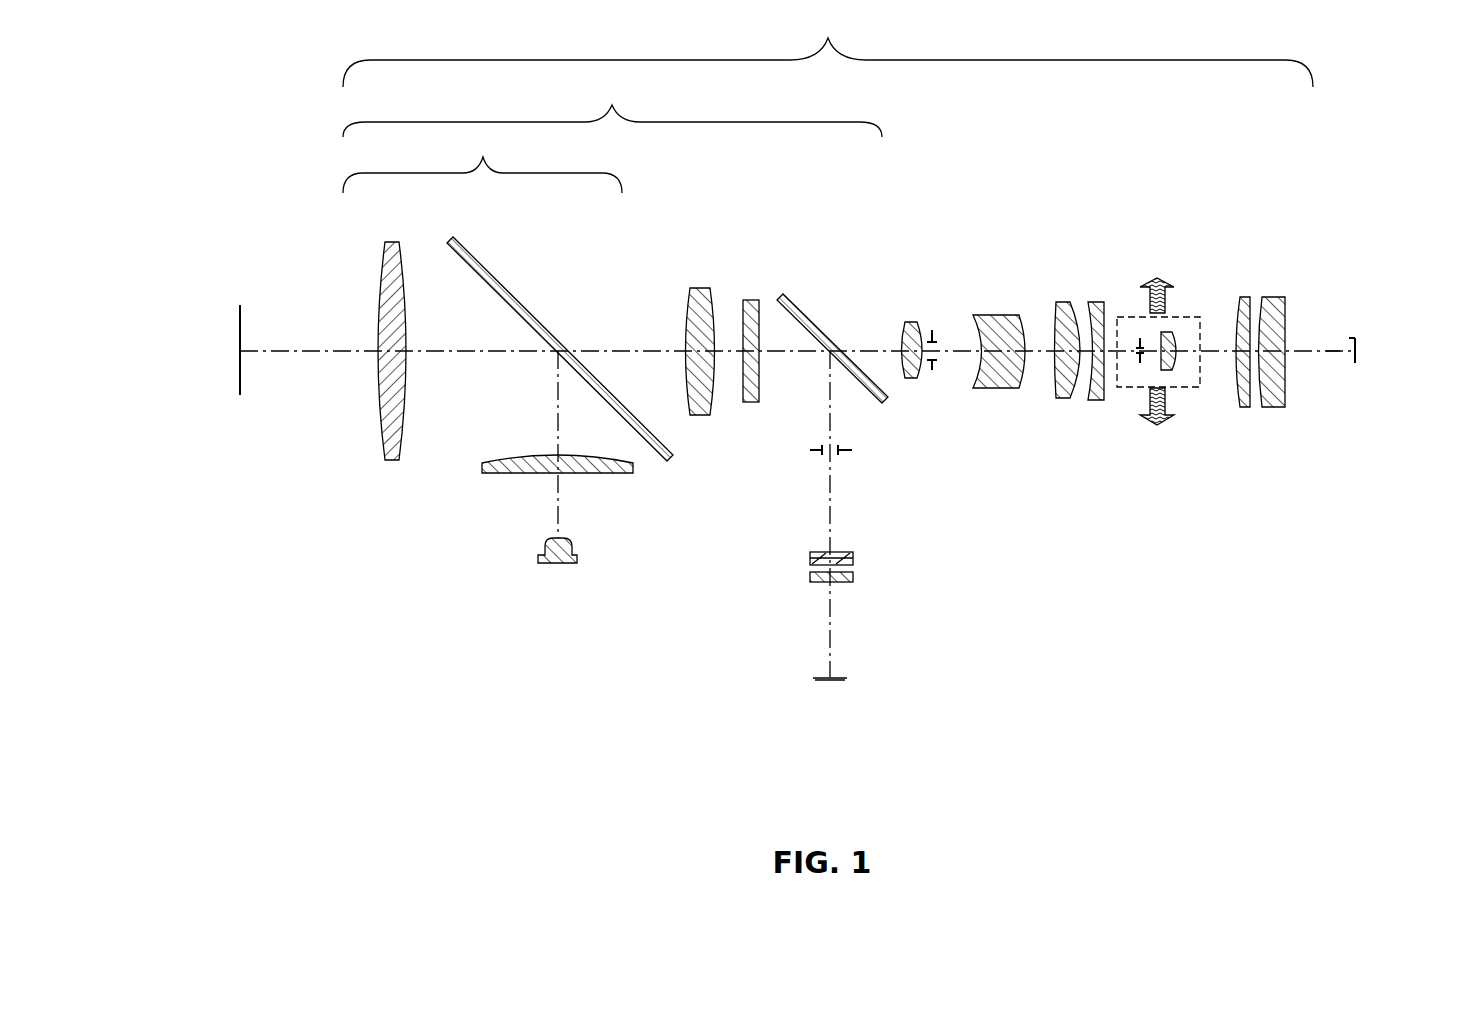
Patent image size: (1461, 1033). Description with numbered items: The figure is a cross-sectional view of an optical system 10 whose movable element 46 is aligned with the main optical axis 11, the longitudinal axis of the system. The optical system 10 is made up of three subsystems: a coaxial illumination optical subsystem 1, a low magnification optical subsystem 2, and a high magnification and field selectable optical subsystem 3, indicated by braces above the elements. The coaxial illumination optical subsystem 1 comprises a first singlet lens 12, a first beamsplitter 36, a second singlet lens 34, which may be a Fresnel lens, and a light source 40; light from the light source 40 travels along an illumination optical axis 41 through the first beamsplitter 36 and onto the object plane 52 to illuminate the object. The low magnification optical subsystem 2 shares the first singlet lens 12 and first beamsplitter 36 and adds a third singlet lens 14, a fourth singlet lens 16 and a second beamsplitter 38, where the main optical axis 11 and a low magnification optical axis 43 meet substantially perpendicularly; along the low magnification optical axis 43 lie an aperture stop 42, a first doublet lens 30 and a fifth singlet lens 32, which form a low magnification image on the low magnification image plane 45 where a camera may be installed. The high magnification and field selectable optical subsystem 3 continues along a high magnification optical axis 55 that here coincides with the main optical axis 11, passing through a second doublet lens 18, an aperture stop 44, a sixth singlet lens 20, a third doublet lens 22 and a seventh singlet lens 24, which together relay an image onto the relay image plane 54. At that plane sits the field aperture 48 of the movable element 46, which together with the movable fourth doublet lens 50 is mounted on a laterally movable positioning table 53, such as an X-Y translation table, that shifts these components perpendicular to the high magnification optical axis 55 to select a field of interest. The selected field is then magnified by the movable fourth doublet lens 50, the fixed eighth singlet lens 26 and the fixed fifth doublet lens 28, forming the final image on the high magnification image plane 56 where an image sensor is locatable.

The coaxial illumination optical subsystem 1 is at (482, 162).
The low magnification optical subsystem 2 is at (612, 108).
The high magnification and field selectable optical subsystem 3 is at (828, 47).
The optical system 10 is at (1124, 590).
The main optical axis 11 is at (317, 356).
The first singlet lens 12 is at (385, 255).
The third singlet lens 14 is at (699, 287).
The fourth singlet lens 16 is at (752, 300).
The second doublet lens 18 is at (913, 322).
The sixth singlet lens 20 is at (984, 313).
The third doublet lens 22 is at (1051, 387).
The seventh singlet lens 24 is at (1088, 390).
The eighth singlet lens 26 is at (1244, 299).
The fifth doublet lens 28 is at (1279, 406).
The first doublet lens 30 is at (809, 557).
The fifth singlet lens 32 is at (810, 581).
The second singlet lens 34 is at (482, 470).
The first beamsplitter 36 is at (478, 268).
The second beamsplitter 38 is at (811, 318).
The light source 40 is at (546, 564).
The illumination optical axis 41 is at (554, 499).
The aperture stop 42 is at (811, 452).
The low magnification optical axis 43 is at (834, 625).
The aperture stop 44 is at (932, 375).
The low magnification image plane 45 is at (817, 683).
The movable element 46 is at (1180, 316).
The field aperture 48 is at (1139, 365).
The movable fourth doublet lens 50 is at (1169, 373).
The object plane 52 is at (239, 307).
The laterally movable positioning table 53 is at (1156, 278).
The relay image plane 54 is at (1139, 325).
The high magnification optical axis 55 is at (1334, 347).
The high magnification image plane 56 is at (1357, 340).